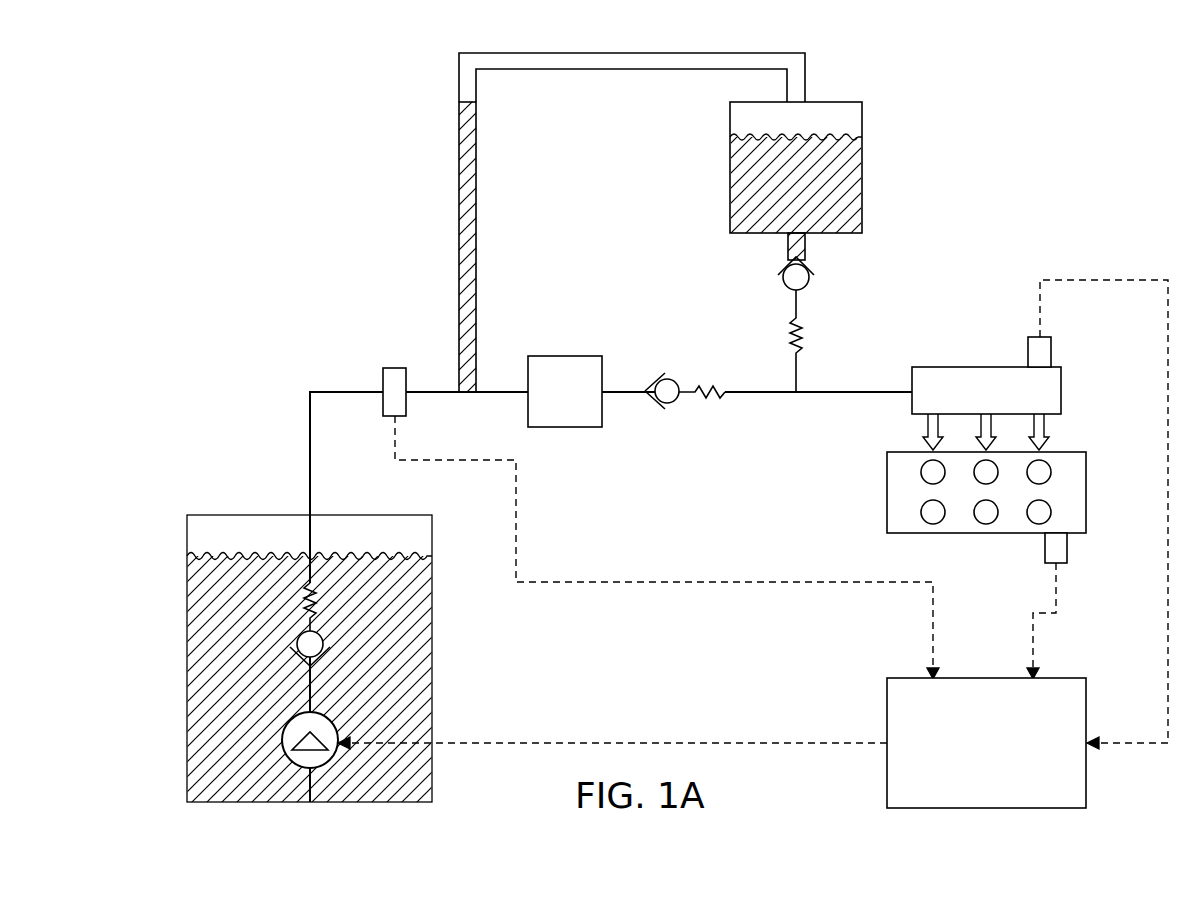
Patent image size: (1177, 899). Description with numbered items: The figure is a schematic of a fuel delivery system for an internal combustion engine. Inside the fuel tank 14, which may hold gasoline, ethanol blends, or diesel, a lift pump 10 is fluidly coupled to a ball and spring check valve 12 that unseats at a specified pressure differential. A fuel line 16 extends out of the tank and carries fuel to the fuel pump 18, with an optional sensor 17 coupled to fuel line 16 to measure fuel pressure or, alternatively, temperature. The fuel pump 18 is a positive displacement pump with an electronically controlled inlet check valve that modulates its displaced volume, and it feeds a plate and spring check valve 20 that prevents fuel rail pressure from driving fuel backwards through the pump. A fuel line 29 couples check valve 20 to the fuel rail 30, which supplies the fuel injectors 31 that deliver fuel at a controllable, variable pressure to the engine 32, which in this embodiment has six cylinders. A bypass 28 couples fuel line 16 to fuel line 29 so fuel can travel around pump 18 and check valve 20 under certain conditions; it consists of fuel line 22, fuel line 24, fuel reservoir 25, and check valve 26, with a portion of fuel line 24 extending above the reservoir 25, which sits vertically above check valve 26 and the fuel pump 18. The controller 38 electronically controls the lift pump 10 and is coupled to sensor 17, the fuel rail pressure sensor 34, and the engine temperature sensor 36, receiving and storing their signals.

The pump 10 is at (332, 720).
The check valve 12 is at (325, 640).
The fuel tank 14 is at (432, 525).
The fuel line 16 is at (333, 390).
The sensor 17 is at (392, 368).
The fuel pump 18 is at (568, 428).
The check valve 20 is at (675, 401).
The fuel line 22 is at (459, 216).
The fuel line 24 is at (620, 70).
The fuel reservoir 25 is at (862, 116).
The check valve 26 is at (800, 326).
The bypass 28 is at (374, 93).
The fuel line 29 is at (855, 390).
The fuel rail 30 is at (985, 366).
The fuel injectors 31 is at (925, 430).
The engine 32 is at (985, 534).
The fuel rail pressure sensor 34 is at (1051, 350).
The engine temperature sensor 36 is at (1067, 560).
The controller 38 is at (887, 708).